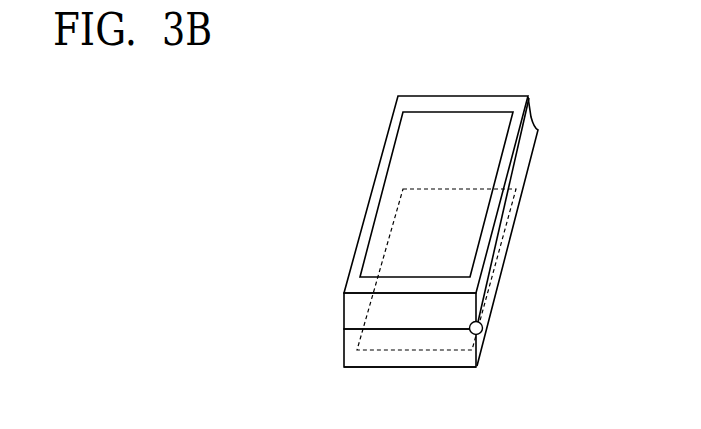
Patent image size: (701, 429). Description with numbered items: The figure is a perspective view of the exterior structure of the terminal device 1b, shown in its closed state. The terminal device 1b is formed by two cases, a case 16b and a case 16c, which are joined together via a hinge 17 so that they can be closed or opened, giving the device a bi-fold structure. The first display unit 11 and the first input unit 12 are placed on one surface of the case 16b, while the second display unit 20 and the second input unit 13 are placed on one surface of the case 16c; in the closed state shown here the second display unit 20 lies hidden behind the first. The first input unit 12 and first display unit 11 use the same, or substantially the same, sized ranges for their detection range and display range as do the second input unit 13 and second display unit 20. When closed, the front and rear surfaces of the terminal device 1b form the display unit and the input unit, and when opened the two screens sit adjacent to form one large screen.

The terminal device 1b is at (512, 314).
The first display unit 11 is at (413, 142).
The first input unit 12 is at (372, 245).
The second input unit 13 is at (344, 333).
The case 16b is at (346, 304).
The case 16c is at (357, 358).
The hinge 17 is at (479, 335).
The second display unit 20 is at (413, 223).